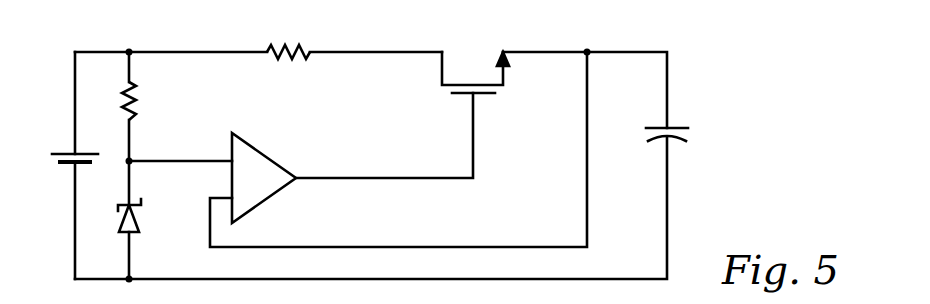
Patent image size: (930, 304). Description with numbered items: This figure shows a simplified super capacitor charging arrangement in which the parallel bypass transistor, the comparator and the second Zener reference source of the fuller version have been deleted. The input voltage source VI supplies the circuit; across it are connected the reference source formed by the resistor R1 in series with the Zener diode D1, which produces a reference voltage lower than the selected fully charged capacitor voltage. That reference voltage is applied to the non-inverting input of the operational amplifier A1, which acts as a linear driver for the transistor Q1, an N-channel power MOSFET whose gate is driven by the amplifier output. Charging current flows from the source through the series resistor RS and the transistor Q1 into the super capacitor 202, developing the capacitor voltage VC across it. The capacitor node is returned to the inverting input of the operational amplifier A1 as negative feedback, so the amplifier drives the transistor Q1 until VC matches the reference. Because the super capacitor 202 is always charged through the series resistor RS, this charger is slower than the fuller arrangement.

The super capacitor 202 is at (682, 141).
The series resistor RS is at (288, 37).
The resistor R1 is at (145, 101).
The Zener diode D1 is at (145, 221).
The operational amplifier A1 is at (264, 178).
The transistor Q1 is at (475, 60).
The input voltage source VI is at (62, 157).
The super capacitor voltage VC is at (706, 129).